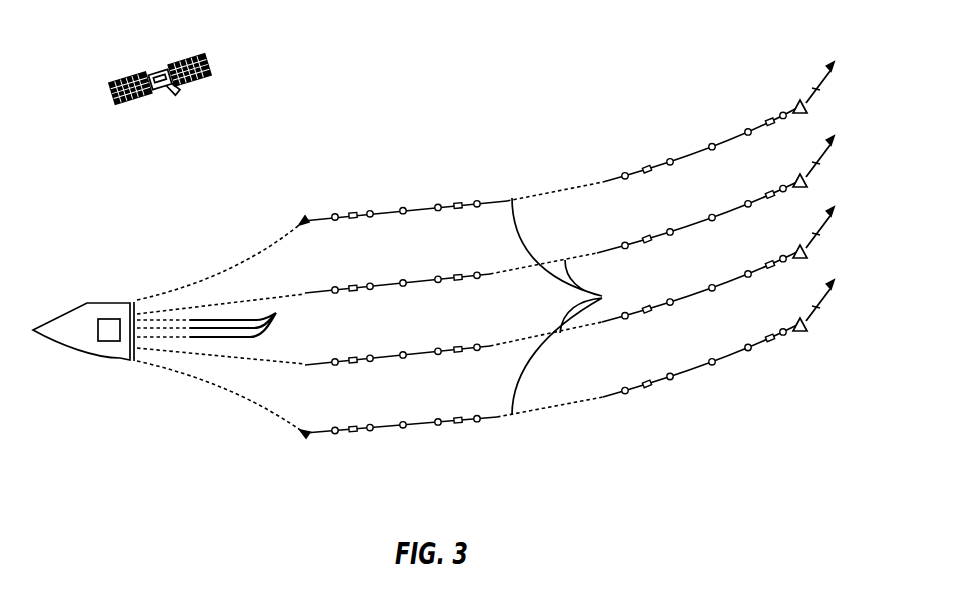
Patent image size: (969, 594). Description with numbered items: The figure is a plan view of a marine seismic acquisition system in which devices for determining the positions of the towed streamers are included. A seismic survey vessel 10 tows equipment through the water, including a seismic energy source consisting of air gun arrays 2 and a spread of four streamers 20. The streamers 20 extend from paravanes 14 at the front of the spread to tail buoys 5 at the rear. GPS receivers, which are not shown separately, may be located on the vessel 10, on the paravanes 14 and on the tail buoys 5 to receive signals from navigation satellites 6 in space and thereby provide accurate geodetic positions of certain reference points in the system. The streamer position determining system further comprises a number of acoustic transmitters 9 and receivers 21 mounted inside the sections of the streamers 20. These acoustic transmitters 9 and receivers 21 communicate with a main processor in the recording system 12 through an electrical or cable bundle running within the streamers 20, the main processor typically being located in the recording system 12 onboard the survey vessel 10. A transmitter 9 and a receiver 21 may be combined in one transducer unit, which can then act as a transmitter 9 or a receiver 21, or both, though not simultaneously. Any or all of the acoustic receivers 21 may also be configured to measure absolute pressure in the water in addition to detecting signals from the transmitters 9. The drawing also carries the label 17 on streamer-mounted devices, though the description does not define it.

The air gun arrays 2 is at (276, 313).
The tail buoys 5 is at (816, 88).
The navigation satellites 6 is at (120, 102).
The acoustic transmitters 9 is at (403, 208).
The seismic survey vessel 10 is at (76, 318).
The recording system 12 is at (107, 341).
The paravanes 14 is at (303, 220).
The acoustic transceiver 17 is at (458, 204).
The streamers 20 is at (602, 296).
The acoustic receivers 21 is at (370, 211).